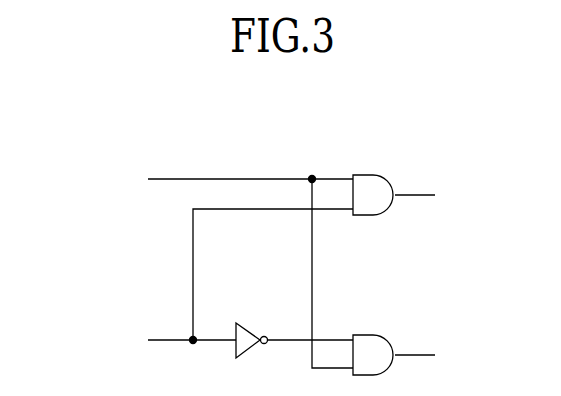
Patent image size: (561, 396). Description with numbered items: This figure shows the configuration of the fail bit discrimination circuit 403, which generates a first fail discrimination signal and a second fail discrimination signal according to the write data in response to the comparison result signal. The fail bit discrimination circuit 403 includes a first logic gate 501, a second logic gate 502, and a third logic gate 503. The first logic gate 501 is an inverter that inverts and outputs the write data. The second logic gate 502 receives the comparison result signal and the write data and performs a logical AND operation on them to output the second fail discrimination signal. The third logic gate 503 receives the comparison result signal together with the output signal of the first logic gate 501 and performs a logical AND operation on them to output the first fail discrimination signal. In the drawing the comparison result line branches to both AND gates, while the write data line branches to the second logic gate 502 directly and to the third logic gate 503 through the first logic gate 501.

The fail bit discrimination circuit 403 is at (483, 105).
The first logic gate 501 is at (251, 330).
The second logic gate 502 is at (364, 174).
The third logic gate 503 is at (364, 334).